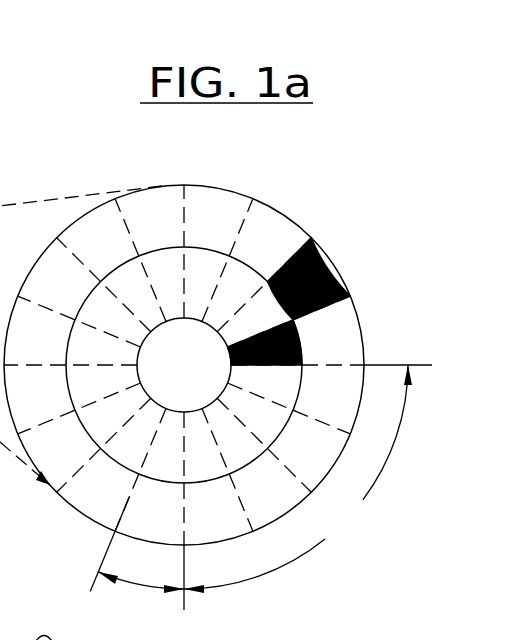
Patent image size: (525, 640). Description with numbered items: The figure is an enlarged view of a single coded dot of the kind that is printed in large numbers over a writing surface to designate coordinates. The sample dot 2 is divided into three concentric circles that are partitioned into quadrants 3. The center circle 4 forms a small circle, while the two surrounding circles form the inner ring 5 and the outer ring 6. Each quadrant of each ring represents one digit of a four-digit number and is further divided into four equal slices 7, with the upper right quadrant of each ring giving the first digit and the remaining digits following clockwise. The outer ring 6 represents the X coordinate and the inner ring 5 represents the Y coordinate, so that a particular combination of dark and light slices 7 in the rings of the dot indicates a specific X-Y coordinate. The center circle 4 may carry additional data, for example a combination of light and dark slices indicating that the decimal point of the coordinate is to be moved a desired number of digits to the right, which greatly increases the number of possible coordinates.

The sample dot 2 is at (182, 328).
The quadrants 3 is at (308, 479).
The center circle 4 is at (115, 427).
The inner ring 5 is at (170, 408).
The outer ring 6 is at (188, 355).
The slices 7 is at (137, 564).